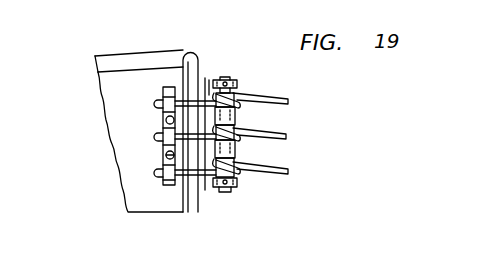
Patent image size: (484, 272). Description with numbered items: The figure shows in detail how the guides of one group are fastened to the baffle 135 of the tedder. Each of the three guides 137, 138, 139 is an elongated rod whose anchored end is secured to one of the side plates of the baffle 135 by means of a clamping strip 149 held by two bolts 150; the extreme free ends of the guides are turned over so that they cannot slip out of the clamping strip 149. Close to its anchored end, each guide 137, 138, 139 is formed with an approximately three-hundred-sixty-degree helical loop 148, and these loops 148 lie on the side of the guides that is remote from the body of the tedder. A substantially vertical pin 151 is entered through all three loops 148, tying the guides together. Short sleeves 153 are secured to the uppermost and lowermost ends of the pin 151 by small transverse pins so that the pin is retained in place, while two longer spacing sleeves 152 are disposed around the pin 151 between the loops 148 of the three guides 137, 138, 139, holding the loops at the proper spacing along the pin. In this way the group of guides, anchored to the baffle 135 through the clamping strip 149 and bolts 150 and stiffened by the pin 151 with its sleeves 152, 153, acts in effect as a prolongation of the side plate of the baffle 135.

The baffle 135 is at (104, 112).
The guide 137 is at (290, 171).
The guide 138 is at (288, 137).
The guide 139 is at (290, 101).
The helical loop 148 is at (205, 78).
The clamping strip 149 is at (172, 181).
The bolt 150 is at (166, 155).
The pin 151 is at (226, 192).
The spacing sleeve 152 is at (236, 150).
The short sleeve 153 is at (238, 81).